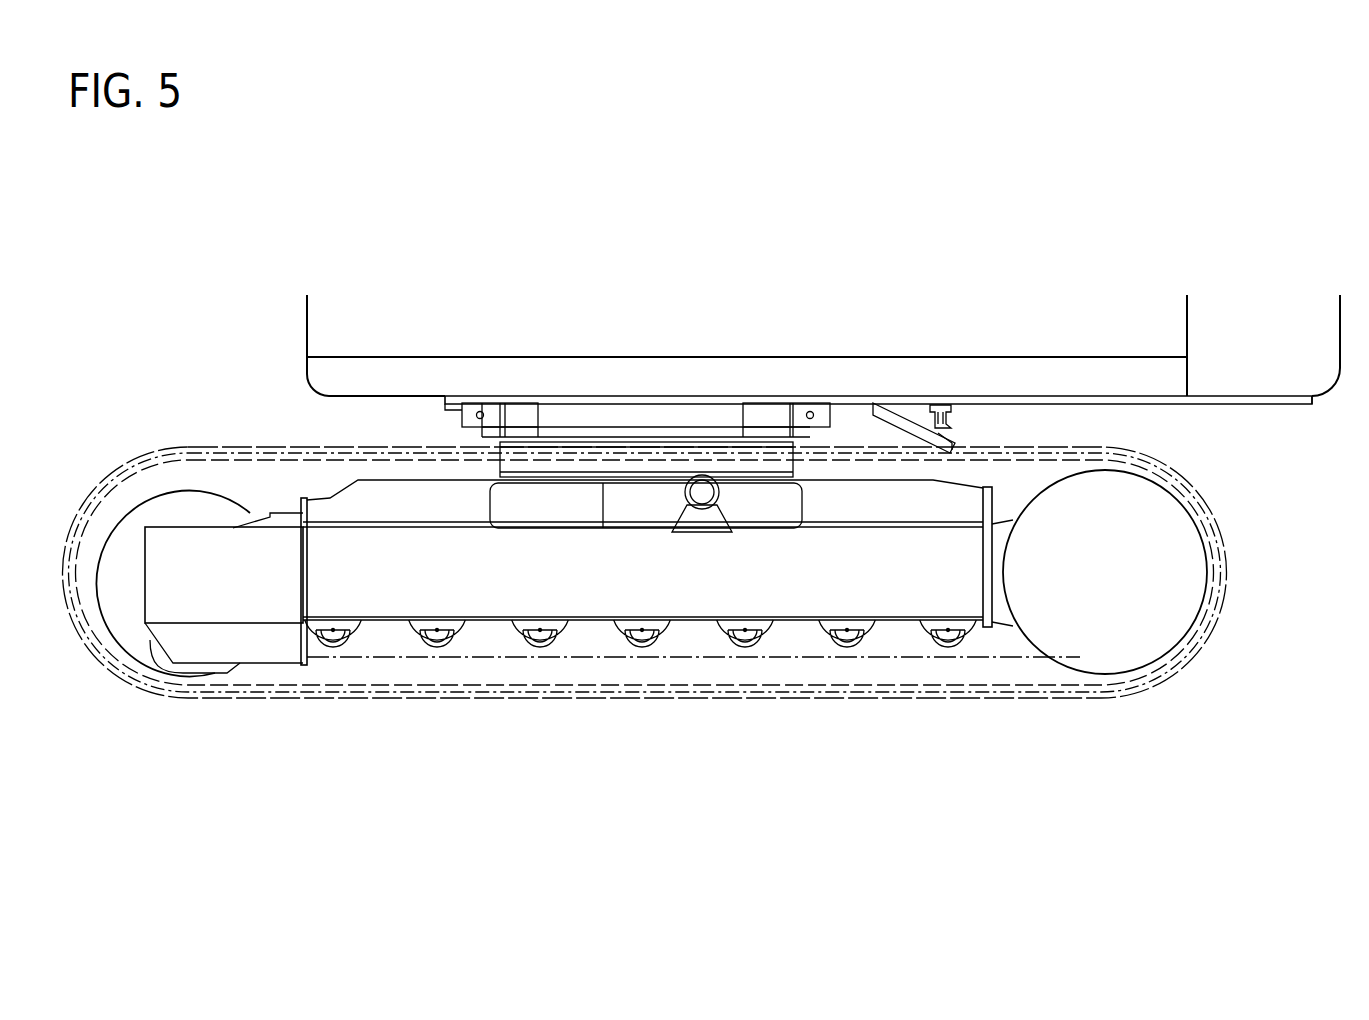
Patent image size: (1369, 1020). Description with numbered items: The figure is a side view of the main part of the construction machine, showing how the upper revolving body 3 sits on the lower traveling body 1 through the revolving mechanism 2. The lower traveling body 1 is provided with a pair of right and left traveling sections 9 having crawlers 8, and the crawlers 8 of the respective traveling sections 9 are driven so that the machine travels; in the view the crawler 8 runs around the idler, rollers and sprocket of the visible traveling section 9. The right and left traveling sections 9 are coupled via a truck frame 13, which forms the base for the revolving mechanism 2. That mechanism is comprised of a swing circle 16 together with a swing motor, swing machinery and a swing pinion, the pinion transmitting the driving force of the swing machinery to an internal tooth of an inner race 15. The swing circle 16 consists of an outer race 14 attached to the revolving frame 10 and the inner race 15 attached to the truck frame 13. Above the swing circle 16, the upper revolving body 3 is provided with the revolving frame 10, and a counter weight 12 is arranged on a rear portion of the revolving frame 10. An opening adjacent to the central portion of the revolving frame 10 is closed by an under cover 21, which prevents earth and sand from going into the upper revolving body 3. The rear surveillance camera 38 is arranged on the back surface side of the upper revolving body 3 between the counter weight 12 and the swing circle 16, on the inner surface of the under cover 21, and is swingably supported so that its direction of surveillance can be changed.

The lower traveling body 1 is at (637, 577).
The revolving mechanism 2 is at (674, 434).
The upper revolving body 3 is at (772, 390).
The crawler 8 is at (968, 702).
The traveling section 9 is at (1055, 702).
The revolving frame 10 is at (1162, 385).
The counter weight 12 is at (1318, 378).
The truck frame 13 is at (940, 489).
The outer race 14 is at (835, 404).
The inner race 15 is at (803, 408).
The swing circle 16 is at (476, 430).
The under cover 21 is at (910, 412).
The rear surveillance camera 38 is at (946, 407).